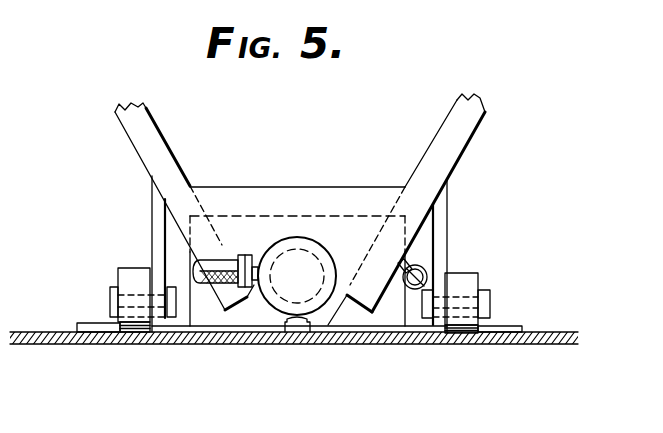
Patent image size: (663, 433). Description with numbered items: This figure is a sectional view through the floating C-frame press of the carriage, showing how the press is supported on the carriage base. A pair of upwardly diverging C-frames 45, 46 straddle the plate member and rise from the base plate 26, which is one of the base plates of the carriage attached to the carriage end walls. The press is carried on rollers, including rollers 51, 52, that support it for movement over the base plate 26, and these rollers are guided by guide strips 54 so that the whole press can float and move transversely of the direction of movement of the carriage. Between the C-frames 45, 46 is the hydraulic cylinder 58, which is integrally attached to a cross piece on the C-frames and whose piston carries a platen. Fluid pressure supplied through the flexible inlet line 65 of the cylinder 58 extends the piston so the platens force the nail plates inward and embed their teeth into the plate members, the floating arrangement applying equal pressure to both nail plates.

The base plate 26 is at (60, 344).
The C-frame 45 is at (149, 168).
The C-frame 46 is at (461, 153).
The roller 51 is at (127, 333).
The roller 52 is at (462, 334).
The guide strip 54 is at (77, 323).
The hydraulic cylinder 58 is at (325, 248).
The flexible inlet line 65 is at (224, 260).